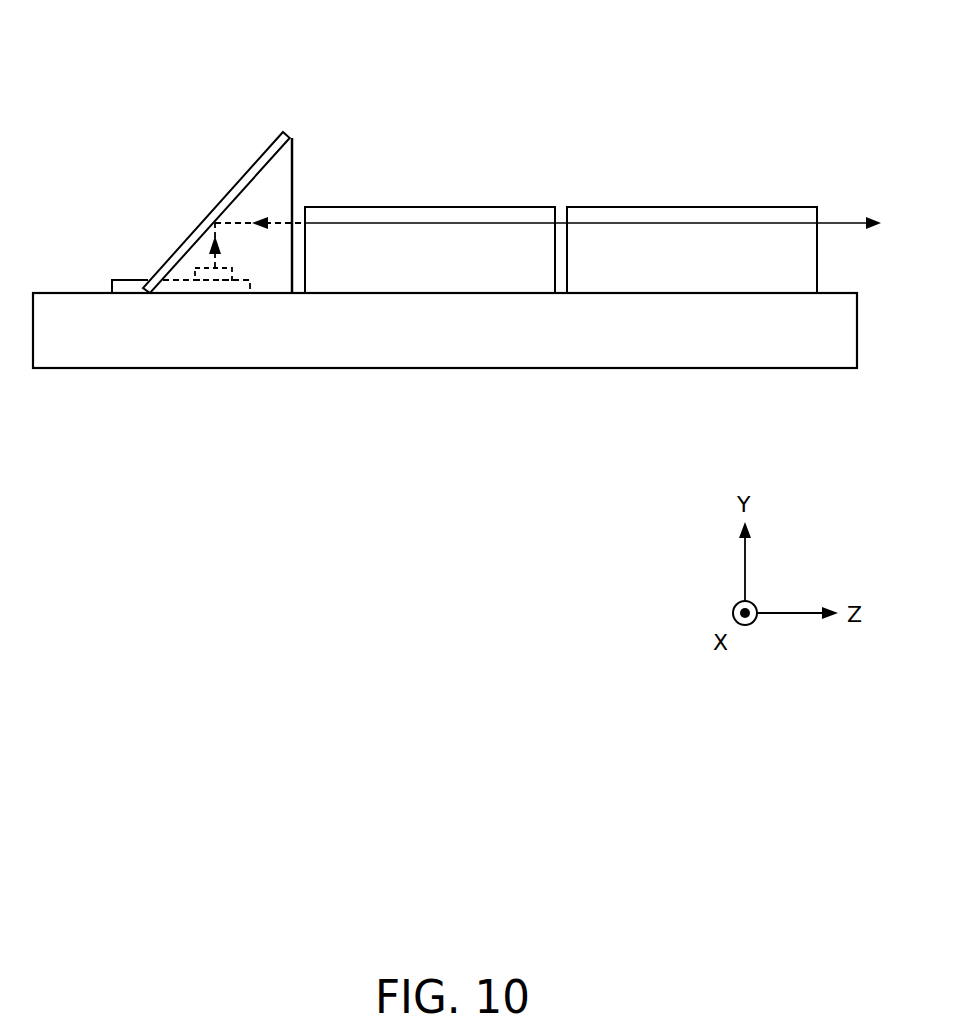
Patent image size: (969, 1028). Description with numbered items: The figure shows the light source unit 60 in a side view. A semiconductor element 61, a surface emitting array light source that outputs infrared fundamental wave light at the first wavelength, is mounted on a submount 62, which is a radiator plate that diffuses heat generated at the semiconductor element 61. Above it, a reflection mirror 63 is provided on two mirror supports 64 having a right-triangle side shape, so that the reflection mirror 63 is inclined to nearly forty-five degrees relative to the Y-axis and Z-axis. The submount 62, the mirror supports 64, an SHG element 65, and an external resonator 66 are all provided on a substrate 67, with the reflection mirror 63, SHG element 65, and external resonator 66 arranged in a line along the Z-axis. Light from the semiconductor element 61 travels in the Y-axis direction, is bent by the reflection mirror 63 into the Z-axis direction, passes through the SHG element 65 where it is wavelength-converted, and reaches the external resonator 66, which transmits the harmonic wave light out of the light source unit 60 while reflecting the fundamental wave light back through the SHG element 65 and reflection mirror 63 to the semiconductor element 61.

The light source unit 60 is at (265, 72).
The semiconductor element 61 is at (215, 293).
The submount 62 is at (168, 293).
The reflection mirror 63 is at (284, 130).
The mirror supports 64 is at (283, 167).
The SHG element 65 is at (494, 207).
The external resonator 66 is at (744, 207).
The substrate 67 is at (738, 352).